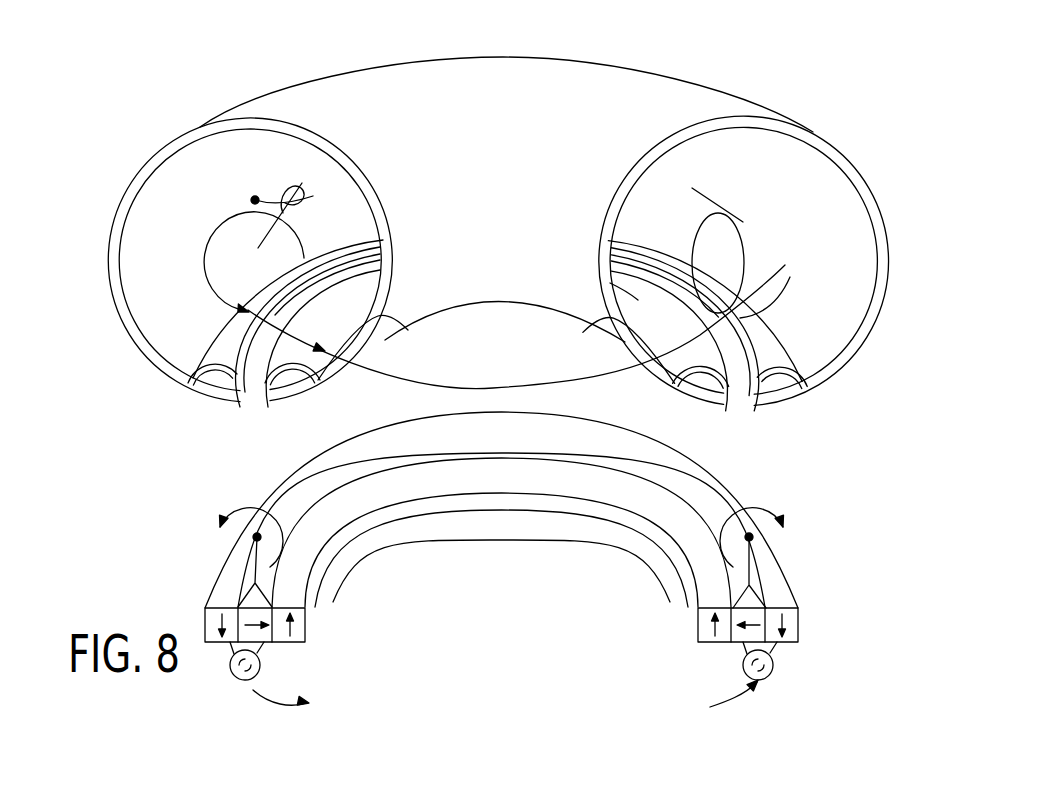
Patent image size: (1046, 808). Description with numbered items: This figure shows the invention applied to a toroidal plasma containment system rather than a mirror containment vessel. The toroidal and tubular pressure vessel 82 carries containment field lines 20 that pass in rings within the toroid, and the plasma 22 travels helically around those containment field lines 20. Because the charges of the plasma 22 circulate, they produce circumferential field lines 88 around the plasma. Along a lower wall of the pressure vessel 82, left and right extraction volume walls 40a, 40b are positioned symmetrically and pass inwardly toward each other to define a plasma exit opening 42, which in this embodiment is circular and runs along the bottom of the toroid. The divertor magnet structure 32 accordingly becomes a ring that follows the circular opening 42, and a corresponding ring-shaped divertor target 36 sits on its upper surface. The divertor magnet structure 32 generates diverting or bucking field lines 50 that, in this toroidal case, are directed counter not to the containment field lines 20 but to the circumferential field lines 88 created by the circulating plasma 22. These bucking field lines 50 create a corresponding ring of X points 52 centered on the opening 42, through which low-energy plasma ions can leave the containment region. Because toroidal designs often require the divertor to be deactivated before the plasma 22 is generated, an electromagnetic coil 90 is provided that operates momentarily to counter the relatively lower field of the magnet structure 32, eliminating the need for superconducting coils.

The toroidal pressure vessel 82 is at (687, 80).
The plasma 22 is at (255, 200).
The circumferential field lines 88 is at (228, 222).
The left extraction volume wall 40a is at (610, 283).
The right extraction volume wall 40b is at (780, 349).
The containment field lines 20 is at (393, 373).
The plasma exit opening 42 is at (243, 414).
The diverting field lines 50 is at (245, 506).
The X points 52 is at (749, 537).
The divertor target 36 is at (745, 598).
The divertor magnet structure 32 is at (807, 625).
The electromagnetic coil 90 is at (777, 675).